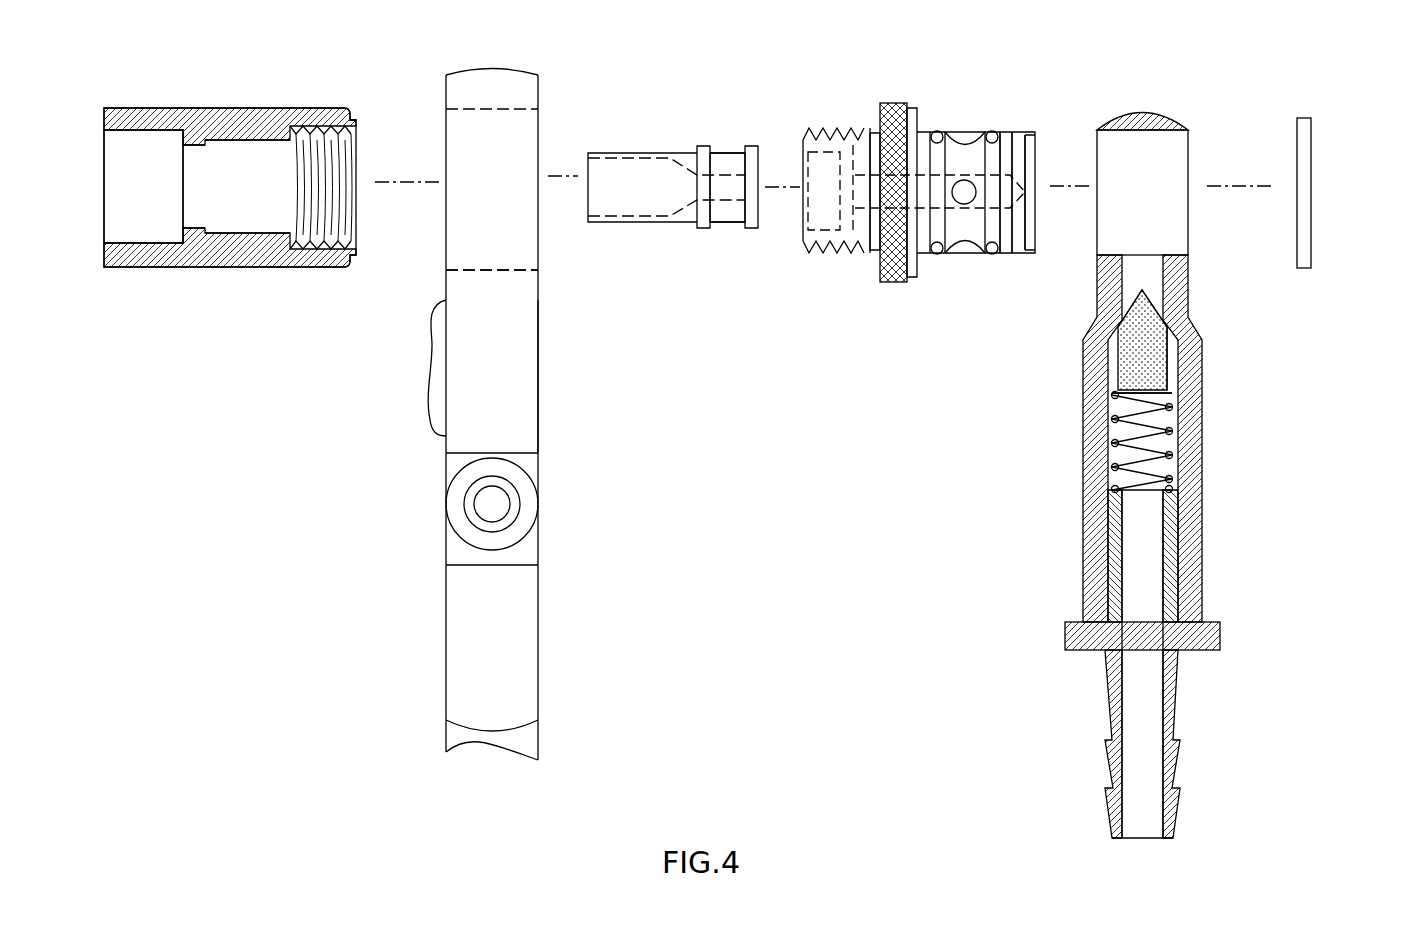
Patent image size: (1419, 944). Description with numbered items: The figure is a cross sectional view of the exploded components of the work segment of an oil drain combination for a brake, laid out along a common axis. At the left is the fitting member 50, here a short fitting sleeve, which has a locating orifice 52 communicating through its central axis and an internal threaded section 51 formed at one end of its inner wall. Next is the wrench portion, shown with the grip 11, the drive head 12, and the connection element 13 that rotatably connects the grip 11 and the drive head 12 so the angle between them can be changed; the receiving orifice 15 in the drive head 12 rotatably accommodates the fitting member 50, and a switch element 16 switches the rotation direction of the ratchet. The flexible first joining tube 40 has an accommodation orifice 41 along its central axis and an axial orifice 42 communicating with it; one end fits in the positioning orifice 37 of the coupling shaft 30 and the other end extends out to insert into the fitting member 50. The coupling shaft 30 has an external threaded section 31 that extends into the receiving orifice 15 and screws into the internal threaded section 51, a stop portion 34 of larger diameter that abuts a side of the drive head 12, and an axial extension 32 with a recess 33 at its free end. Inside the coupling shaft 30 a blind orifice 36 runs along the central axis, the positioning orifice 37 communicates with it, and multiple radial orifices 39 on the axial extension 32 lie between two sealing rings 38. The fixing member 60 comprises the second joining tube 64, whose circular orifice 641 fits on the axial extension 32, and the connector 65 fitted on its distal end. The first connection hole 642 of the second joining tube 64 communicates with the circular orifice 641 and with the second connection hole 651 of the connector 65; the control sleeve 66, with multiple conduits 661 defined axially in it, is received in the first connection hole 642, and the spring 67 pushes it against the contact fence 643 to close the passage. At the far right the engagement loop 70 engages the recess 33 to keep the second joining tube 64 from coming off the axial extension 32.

The grip 11 is at (490, 600).
The drive head 12 is at (540, 352).
The connection element 13 is at (492, 504).
The receiving orifice 15 is at (488, 272).
The switch element 16 is at (428, 391).
The coupling shaft 30 is at (904, 83).
The external threaded section 31 is at (834, 130).
The axial extension 32 is at (985, 135).
The recess 33 is at (1020, 254).
The stop portion 34 is at (892, 284).
The blind orifice 36 is at (975, 212).
The positioning orifice 37 is at (818, 215).
The sealing rings 38 is at (935, 252).
The radial orifices 39 is at (963, 185).
The first joining tube 40 is at (677, 148).
The accommodation orifice 41 is at (644, 210).
The axial orifice 42 is at (733, 200).
The fitting member 50 is at (232, 98).
The internal threaded section 51 is at (330, 225).
The locating orifice 52 is at (158, 228).
The fixing member 60 is at (1168, 103).
The second joining tube 64 is at (1203, 505).
The connector 65 is at (1180, 672).
The control sleeve 66 is at (1147, 356).
The spring 67 is at (1132, 428).
The engagement loop 70 is at (1312, 118).
The circular orifice 641 is at (1155, 236).
The first connection hole 642 is at (1172, 438).
The contact fence 643 is at (1155, 332).
The second connection hole 651 is at (1148, 566).
The conduits 661 is at (1173, 372).